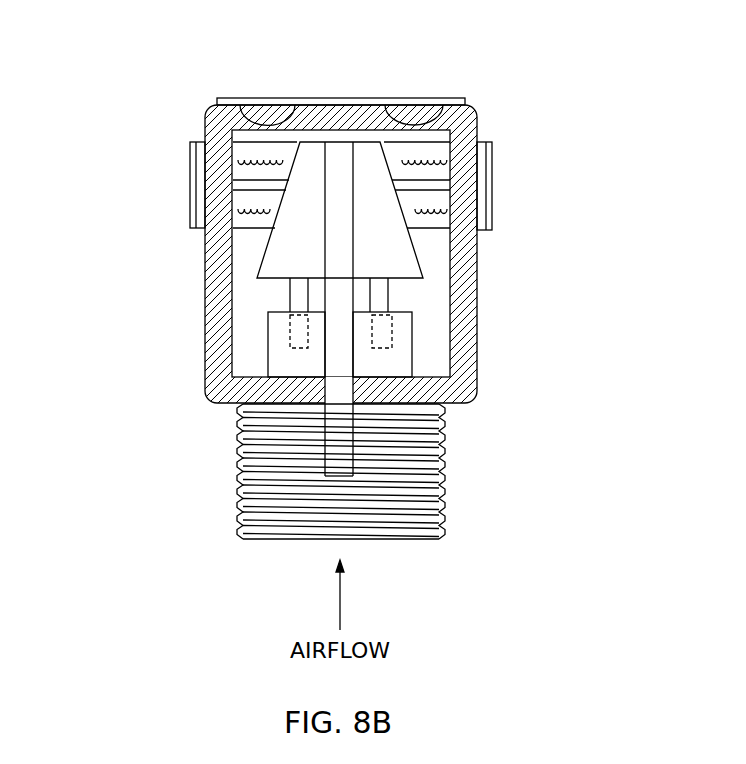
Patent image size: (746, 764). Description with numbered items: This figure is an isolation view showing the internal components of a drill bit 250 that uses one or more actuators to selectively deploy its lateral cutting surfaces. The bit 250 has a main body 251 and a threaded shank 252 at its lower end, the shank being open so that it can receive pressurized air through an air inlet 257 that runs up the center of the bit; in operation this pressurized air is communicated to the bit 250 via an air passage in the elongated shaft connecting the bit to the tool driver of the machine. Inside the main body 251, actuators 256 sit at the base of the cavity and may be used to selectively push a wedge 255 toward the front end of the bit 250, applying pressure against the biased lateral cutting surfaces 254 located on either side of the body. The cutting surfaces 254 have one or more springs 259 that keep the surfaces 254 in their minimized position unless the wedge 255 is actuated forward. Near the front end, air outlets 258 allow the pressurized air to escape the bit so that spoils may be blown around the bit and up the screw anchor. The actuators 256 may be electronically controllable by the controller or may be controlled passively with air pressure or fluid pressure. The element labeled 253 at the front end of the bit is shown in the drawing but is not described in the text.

The bit 250 is at (598, 76).
The main body 251 is at (477, 337).
The threaded shank 252 is at (445, 473).
The top plate 253 is at (417, 100).
The lateral cutting surfaces 254 is at (190, 170).
The wedge 255 is at (302, 223).
The actuators 256 is at (282, 350).
The air inlet 257 is at (338, 237).
The air outlets 258 is at (258, 100).
The springs 259 is at (254, 160).